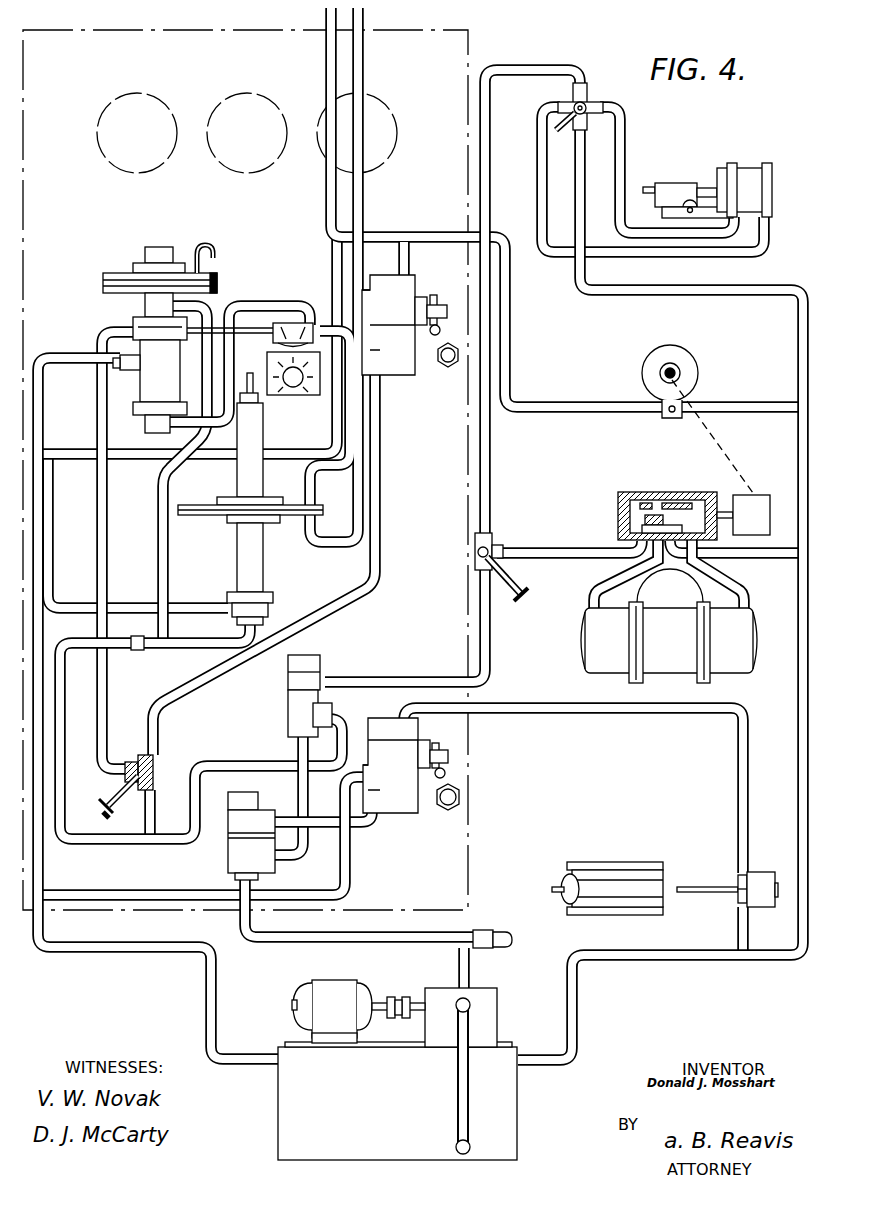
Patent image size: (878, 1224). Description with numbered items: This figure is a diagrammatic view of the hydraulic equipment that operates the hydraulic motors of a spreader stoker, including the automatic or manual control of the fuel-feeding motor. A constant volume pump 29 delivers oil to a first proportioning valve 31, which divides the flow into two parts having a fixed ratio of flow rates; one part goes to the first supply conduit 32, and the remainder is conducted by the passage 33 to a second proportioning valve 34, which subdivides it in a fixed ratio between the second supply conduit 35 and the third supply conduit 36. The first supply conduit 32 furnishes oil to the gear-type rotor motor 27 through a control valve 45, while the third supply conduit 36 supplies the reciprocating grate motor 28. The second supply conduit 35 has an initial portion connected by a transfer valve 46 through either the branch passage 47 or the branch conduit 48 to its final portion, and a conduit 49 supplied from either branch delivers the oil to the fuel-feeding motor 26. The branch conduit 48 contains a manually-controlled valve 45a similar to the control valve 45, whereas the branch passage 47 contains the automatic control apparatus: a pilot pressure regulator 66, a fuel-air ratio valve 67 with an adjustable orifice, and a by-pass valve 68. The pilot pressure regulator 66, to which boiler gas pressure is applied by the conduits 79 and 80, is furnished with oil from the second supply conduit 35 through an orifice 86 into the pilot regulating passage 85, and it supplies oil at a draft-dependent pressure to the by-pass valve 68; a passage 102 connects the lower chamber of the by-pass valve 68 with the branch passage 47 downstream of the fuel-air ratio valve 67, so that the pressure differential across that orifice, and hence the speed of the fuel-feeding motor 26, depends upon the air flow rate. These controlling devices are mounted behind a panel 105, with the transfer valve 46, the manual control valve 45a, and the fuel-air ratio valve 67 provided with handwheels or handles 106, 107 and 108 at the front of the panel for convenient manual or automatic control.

The fuel-feeding motor 26 is at (680, 355).
The rotor motor 27 is at (760, 876).
The grate motor 28 is at (596, 654).
The pump 29 is at (490, 997).
The first proportioning valve 31 is at (230, 858).
The first supply conduit 32 is at (360, 828).
The passage 33 is at (305, 797).
The second proportioning valve 34 is at (288, 719).
The second supply conduit 35 is at (218, 765).
The third supply conduit 36 is at (543, 552).
The control valve 45 is at (400, 812).
The manually-controlled valve 45a is at (417, 338).
The transfer valve 46 is at (133, 785).
The branch passage 47 is at (98, 342).
The branch conduit 48 is at (377, 424).
The conduit 49 is at (507, 362).
The pilot pressure regulator 66 is at (296, 529).
The fuel-air ratio valve 67 is at (257, 377).
The by-pass valve 68 is at (126, 313).
The conduit 79 is at (329, 17).
The conduit 80 is at (360, 18).
The pilot regulating passage 85 is at (209, 372).
The orifice 86 is at (137, 650).
The passage 102 is at (229, 307).
The panel 105 is at (466, 856).
The handwheel or handle 106 is at (109, 797).
The handwheel or handle 107 is at (454, 365).
The handwheel or handle 108 is at (297, 387).